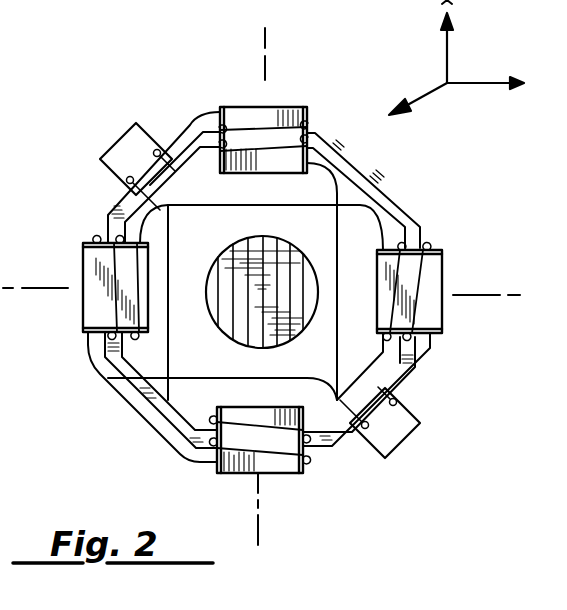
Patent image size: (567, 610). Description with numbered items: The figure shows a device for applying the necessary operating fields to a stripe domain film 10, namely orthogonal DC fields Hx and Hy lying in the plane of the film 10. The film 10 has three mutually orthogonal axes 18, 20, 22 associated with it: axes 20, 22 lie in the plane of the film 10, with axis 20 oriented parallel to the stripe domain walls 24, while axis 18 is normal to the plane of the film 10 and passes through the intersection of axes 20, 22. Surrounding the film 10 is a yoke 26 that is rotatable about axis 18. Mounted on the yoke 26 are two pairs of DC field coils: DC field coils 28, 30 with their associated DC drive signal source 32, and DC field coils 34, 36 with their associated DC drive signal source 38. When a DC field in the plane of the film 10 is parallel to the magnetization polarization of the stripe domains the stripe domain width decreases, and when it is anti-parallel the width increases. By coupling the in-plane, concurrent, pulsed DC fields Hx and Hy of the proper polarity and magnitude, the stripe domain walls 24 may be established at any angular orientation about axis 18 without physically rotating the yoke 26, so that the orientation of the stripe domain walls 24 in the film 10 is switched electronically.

The film 10 is at (232, 253).
The axis 18 is at (423, 93).
The axis 20 is at (449, 35).
The axis 22 is at (482, 83).
The stripe domain walls 24 is at (243, 333).
The yoke 26 is at (370, 171).
The DC field coil 28 is at (298, 105).
The DC field coil 30 is at (270, 473).
The DC drive signal source 32 is at (120, 144).
The DC field coil 34 is at (443, 267).
The DC field coil 36 is at (83, 315).
The DC drive signal source 38 is at (405, 437).